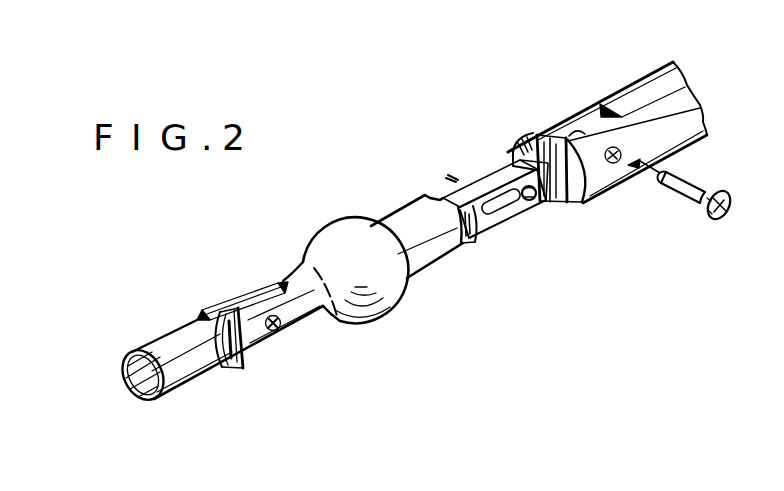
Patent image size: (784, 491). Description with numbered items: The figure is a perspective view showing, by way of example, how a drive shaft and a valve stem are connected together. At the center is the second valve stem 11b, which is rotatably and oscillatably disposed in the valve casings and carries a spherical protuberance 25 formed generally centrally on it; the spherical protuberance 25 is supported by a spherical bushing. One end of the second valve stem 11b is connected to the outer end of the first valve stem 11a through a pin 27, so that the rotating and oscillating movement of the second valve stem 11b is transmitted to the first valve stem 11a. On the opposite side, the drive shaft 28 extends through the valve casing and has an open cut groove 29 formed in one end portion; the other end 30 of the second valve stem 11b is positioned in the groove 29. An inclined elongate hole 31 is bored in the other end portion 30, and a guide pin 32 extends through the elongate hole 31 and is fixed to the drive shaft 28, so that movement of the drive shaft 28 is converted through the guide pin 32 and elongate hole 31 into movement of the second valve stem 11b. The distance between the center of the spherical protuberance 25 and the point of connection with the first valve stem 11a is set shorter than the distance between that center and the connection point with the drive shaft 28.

The first valve stem 11a is at (165, 338).
The second valve stem 11b is at (440, 242).
The spherical protuberance 25 is at (363, 307).
The pin 27 is at (268, 334).
The drive shaft 28 is at (650, 110).
The open cut groove 29 is at (580, 111).
The other end 30 is at (490, 224).
The inclined elongate hole 31 is at (520, 210).
The guide pin 32 is at (690, 200).